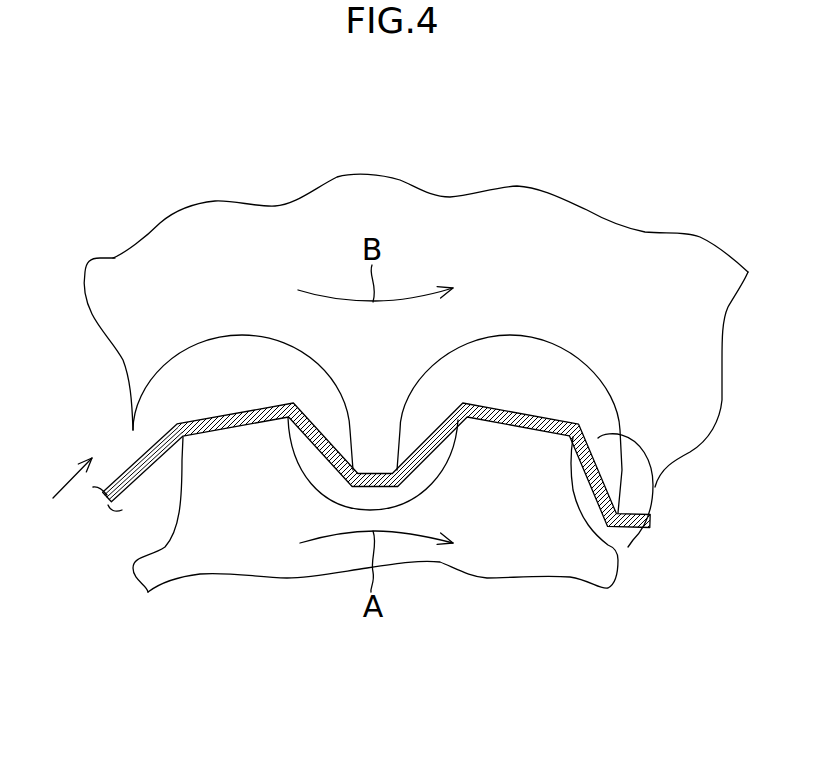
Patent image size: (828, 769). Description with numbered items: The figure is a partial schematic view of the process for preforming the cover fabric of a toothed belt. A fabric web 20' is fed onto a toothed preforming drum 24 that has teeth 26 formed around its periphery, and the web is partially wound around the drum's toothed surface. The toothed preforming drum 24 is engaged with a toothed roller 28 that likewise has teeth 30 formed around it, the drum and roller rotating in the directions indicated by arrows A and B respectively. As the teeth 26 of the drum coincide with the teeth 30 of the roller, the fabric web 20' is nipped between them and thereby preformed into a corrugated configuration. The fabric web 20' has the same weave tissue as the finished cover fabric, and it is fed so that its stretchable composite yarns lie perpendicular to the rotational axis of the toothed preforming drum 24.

The toothed roller 28 is at (628, 215).
The toothed preforming drum 24 is at (572, 580).
The fabric web 20' is at (424, 465).
The teeth 26 is at (213, 443).
The teeth 30 is at (361, 412).